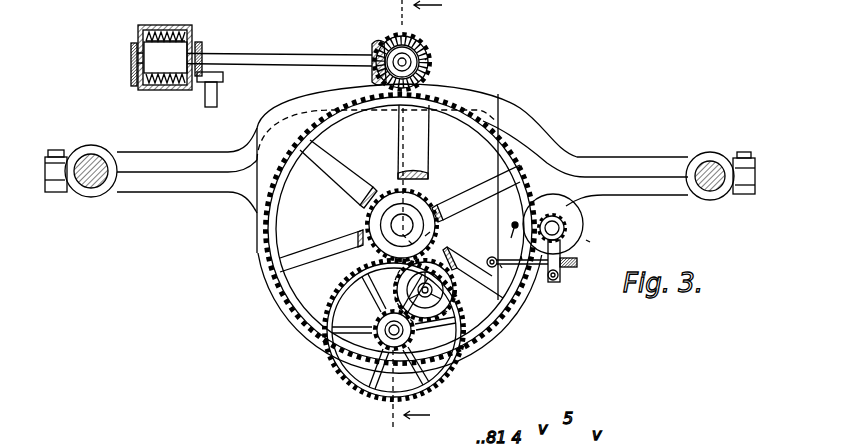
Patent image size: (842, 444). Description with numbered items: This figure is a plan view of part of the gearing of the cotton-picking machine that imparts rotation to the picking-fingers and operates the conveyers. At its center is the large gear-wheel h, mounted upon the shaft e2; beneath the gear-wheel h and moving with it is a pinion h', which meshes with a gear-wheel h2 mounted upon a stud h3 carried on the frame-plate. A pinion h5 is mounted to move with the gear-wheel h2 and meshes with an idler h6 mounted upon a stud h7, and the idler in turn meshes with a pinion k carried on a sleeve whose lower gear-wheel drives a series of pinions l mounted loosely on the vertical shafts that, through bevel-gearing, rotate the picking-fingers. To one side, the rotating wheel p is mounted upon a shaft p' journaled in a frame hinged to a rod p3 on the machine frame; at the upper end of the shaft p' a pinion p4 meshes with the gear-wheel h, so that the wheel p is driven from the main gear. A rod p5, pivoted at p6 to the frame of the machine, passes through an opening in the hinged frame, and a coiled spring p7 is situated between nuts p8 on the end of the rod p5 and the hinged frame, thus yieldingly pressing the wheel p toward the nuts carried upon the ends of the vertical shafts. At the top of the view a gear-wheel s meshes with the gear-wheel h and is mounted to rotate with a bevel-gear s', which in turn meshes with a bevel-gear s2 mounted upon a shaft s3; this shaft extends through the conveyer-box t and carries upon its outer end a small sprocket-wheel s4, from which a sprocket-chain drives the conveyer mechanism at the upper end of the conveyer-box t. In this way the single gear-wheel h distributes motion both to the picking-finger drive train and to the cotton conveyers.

The gear-wheel h is at (400, 221).
The shaft e2 is at (403, 222).
The pinion h' is at (452, 235).
The gear-wheel h2 is at (345, 372).
The stud h3 is at (375, 331).
The pinion h5 is at (383, 320).
The stud h7 is at (417, 288).
The idler h6 is at (447, 312).
The shaft p' is at (575, 224).
The rotating wheel p is at (586, 235).
The pinion p4 is at (590, 242).
The coiled spring p7 is at (560, 278).
The rod p3 is at (557, 283).
The nuts p8 is at (578, 262).
The pinion k is at (489, 258).
The pinions l is at (511, 239).
The rod p5 is at (522, 260).
The pivot p6 is at (502, 268).
The shaft s3 is at (268, 58).
The conveyer-box t is at (172, 90).
The sprocket-wheel s4 is at (136, 77).
The bevel-gear s2 is at (382, 43).
The gear-wheel s is at (422, 45).
The bevel-gear s' is at (450, 46).